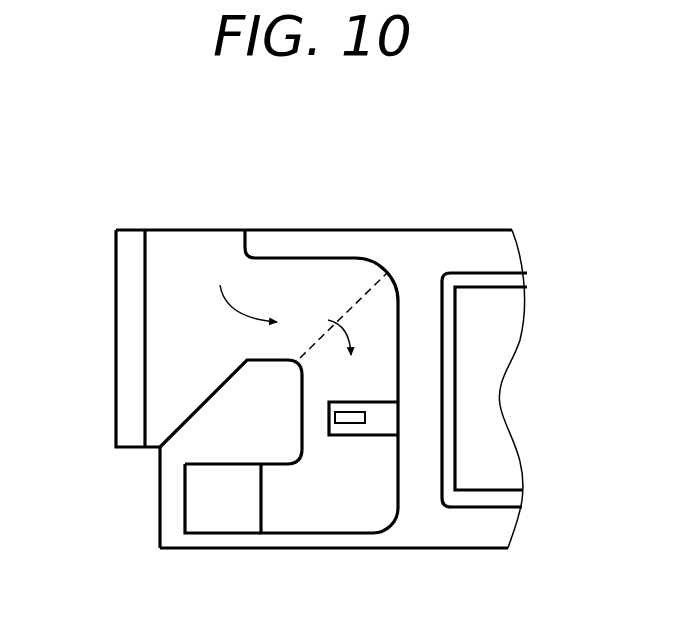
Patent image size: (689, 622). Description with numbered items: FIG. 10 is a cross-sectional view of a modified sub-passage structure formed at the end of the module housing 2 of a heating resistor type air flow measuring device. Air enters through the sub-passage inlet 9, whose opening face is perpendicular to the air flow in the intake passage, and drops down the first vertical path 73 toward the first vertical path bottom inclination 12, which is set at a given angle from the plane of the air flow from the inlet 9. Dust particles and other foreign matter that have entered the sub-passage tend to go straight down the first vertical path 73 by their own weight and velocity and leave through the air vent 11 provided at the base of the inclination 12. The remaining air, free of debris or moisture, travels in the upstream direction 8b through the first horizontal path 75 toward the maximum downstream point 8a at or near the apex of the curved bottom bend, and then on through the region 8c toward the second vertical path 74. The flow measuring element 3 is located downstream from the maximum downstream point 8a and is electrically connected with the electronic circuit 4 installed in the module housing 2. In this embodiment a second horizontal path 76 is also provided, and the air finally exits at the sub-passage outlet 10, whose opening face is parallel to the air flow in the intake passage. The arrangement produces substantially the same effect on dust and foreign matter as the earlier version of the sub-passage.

The module housing 2 is at (477, 230).
The flow measuring element 3 is at (372, 438).
The electronic circuit 4 is at (480, 457).
The maximum downstream point 8a is at (397, 290).
The upstream direction 8b is at (233, 313).
The third passage 8c is at (333, 322).
The sub-passage inlet 9 is at (168, 228).
The sub-passage outlet 10 is at (242, 515).
The air vent 11 is at (147, 448).
The first vertical path bottom inclination 12 is at (195, 408).
The first vertical path 73 is at (160, 300).
The second vertical path 74 is at (370, 370).
The first horizontal path 75 is at (270, 277).
The second horizontal path 76 is at (310, 497).